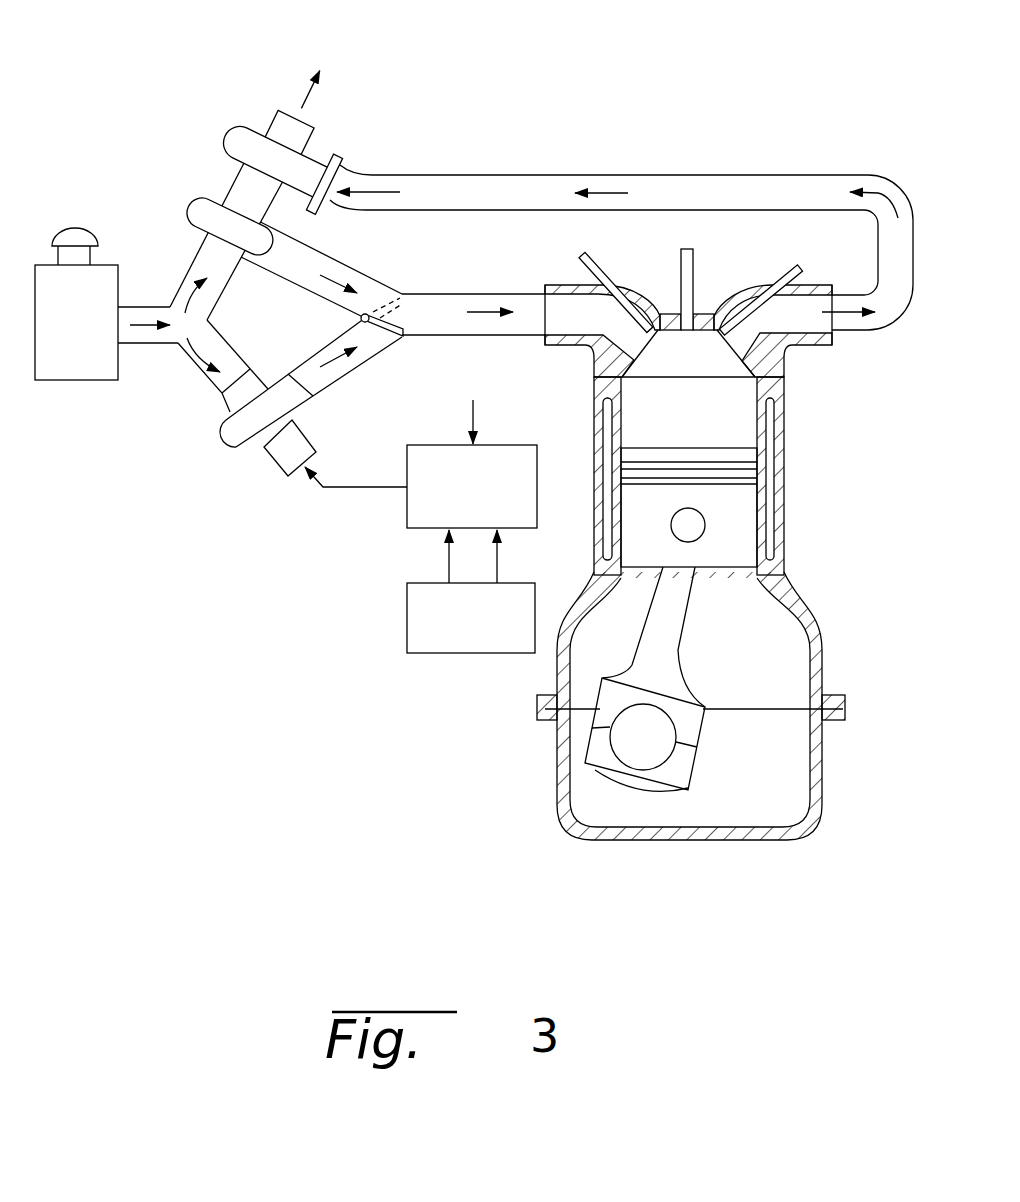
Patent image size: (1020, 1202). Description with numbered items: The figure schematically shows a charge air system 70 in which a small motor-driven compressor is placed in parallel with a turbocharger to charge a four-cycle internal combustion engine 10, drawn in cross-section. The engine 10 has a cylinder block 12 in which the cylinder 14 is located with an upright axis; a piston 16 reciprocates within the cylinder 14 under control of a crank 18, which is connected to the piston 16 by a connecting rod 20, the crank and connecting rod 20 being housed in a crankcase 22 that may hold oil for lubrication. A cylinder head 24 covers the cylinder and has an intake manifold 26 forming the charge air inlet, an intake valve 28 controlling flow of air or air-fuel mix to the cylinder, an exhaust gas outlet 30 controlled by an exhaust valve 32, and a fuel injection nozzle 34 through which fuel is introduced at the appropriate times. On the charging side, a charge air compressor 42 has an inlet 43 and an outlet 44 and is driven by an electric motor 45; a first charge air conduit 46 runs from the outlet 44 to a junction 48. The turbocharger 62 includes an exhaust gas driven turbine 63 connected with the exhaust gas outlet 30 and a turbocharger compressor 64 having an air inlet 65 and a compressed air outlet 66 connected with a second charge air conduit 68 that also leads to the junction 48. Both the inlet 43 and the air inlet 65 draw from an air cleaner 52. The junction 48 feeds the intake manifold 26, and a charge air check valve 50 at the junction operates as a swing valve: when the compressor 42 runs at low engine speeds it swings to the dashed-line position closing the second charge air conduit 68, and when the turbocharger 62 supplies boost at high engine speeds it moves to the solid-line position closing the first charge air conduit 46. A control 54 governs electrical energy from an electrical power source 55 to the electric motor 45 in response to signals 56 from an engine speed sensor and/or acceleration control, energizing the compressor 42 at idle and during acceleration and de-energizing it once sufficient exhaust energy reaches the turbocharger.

The internal combustion engine 10 is at (632, 534).
The cylinder block 12 is at (783, 480).
The cylinder 14 is at (748, 414).
The piston 16 is at (735, 542).
The crank 18 is at (655, 750).
The connecting rod 20 is at (668, 645).
The crankcase 22 is at (822, 648).
The cylinder head 24 is at (592, 370).
The intake manifold 26 is at (574, 310).
The intake valve 28 is at (597, 267).
The exhaust gas outlet 30 is at (822, 323).
The exhaust valve 32 is at (787, 260).
The fuel injection nozzle 34 is at (697, 277).
The charge air compressor 42 is at (225, 437).
The inlet 43 is at (228, 410).
The outlet 44 is at (300, 406).
The electric motor 45 is at (275, 465).
The first charge air conduit 46 is at (363, 367).
The junction 48 is at (402, 315).
The charge air check valve 50 is at (390, 336).
The air cleaner 52 is at (77, 246).
The control 54 is at (407, 508).
The electrical power source 55 is at (407, 615).
The signals 56 is at (474, 412).
The turbocharger 62 is at (236, 116).
The exhaust gas driven turbine 63 is at (338, 150).
The turbocharger compressor 64 is at (190, 206).
The air inlet 65 is at (205, 238).
The compressed air outlet 66 is at (281, 222).
The second charge air conduit 68 is at (370, 275).
The charge air system 70 is at (516, 173).